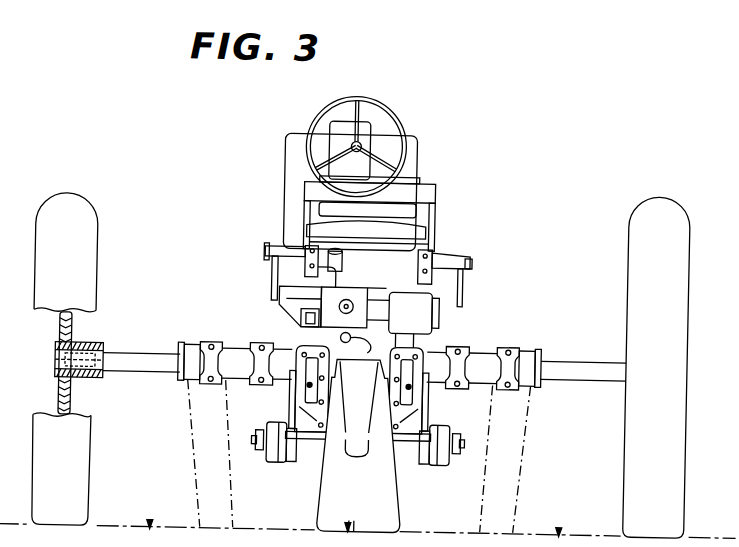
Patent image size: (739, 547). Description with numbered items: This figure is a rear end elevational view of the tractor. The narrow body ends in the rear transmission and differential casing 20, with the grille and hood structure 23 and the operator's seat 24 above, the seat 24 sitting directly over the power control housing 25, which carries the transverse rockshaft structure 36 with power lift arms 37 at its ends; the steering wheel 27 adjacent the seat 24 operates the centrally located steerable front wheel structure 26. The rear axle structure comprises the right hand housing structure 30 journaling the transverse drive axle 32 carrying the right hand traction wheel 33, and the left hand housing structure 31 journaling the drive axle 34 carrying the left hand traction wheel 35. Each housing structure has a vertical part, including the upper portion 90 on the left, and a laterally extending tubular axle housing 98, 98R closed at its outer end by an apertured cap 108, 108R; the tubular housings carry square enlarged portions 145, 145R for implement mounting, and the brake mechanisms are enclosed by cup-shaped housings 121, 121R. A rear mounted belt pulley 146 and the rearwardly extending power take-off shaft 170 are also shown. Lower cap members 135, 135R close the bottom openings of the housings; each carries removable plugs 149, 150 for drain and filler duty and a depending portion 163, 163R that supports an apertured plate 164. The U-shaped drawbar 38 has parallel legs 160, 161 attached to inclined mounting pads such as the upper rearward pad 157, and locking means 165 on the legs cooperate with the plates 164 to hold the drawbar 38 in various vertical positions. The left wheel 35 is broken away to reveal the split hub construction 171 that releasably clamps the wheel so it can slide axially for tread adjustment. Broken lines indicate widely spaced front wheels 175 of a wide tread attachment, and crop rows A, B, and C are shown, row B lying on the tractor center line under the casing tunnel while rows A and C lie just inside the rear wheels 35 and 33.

The rear transmission and differential casing 20 is at (419, 350).
The grille and hood structure 23 is at (414, 144).
The operator's seat 24 is at (433, 191).
The power control housing 25 is at (294, 252).
The steerable front wheel structure 26 is at (404, 503).
The steering wheel 27 is at (381, 106).
The right hand housing structure 30 is at (583, 389).
The left hand housing structure 31 is at (141, 364).
The transverse drive axle 32 is at (588, 376).
The right hand traction wheel 33 is at (665, 201).
The transverse drive axle 34 is at (140, 358).
The left hand traction wheel 35 is at (72, 203).
The transverse rockshaft structure 36 is at (471, 257).
The power lift arms 37 is at (369, 266).
The drawbar 38 is at (278, 458).
The upper portion 90 is at (322, 300).
The tubular axle housing 98 is at (218, 368).
The tubular axle housing 98R is at (502, 345).
The apertured cap 108 is at (190, 345).
The apertured cap 108R is at (543, 352).
The cup-shaped housing 121 is at (302, 303).
The cup-shaped housing 121R is at (454, 312).
The lower closure or cap member 135 is at (285, 404).
The lower closure or cap member 135R is at (448, 414).
The enlarged portions 145 is at (209, 388).
The enlarged portions 145R is at (518, 346).
The belt pulley 146 is at (425, 318).
The removable plug 149 is at (411, 388).
The removable plug 150 is at (308, 388).
The mounting pad 157 is at (300, 320).
The drawbar leg 160 is at (282, 466).
The drawbar leg 161 is at (444, 459).
The depending portion 163 is at (300, 405).
The depending portion 163R is at (419, 405).
The apertured plate 164 is at (293, 463).
The locking means 165 is at (257, 440).
The power take-off shaft 170 is at (354, 346).
The split hub construction 171 is at (82, 349).
The widely spaced front wheels 175 is at (197, 484).
The crop row A is at (153, 531).
The center crop row B is at (351, 530).
The crop row C is at (562, 531).